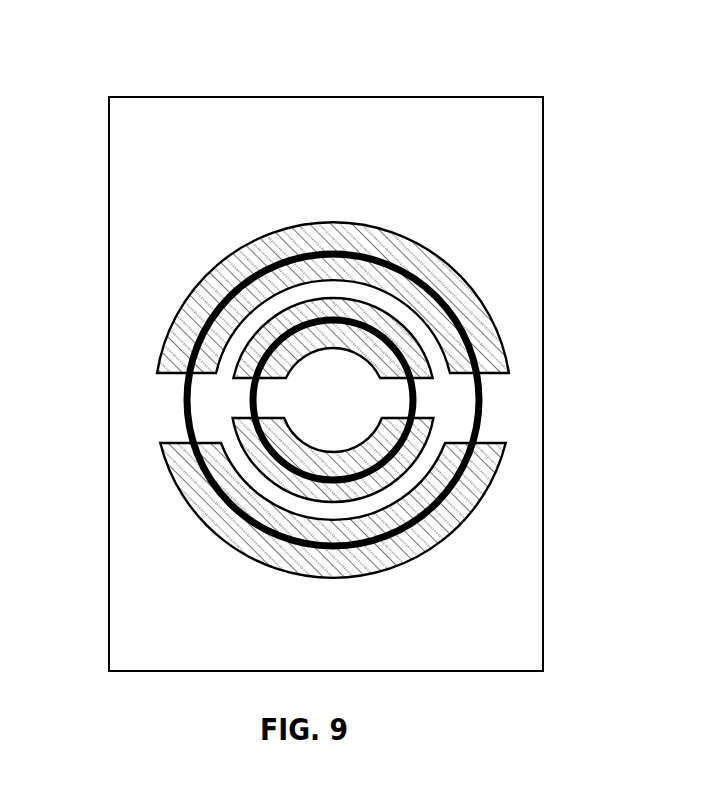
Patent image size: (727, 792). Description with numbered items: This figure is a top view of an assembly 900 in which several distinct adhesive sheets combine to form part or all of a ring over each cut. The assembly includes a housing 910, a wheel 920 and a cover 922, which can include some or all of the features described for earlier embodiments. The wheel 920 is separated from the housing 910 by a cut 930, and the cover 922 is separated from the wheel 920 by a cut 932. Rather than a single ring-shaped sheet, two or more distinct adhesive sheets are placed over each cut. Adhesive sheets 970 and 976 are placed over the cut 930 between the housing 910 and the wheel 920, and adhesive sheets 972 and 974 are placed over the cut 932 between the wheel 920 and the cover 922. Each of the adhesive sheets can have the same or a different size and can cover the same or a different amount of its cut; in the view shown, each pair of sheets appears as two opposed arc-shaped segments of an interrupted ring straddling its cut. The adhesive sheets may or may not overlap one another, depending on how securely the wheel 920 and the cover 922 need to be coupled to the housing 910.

The sensor device 900 is at (558, 48).
The housing 910 is at (117, 192).
The wheel 920 is at (247, 332).
The cover 922 is at (335, 373).
The cut 930 is at (458, 318).
The cut 932 is at (402, 353).
The adhesive sheet 970 is at (487, 350).
The adhesive sheet 972 is at (250, 438).
The adhesive sheet 974 is at (417, 363).
The adhesive sheet 976 is at (440, 523).